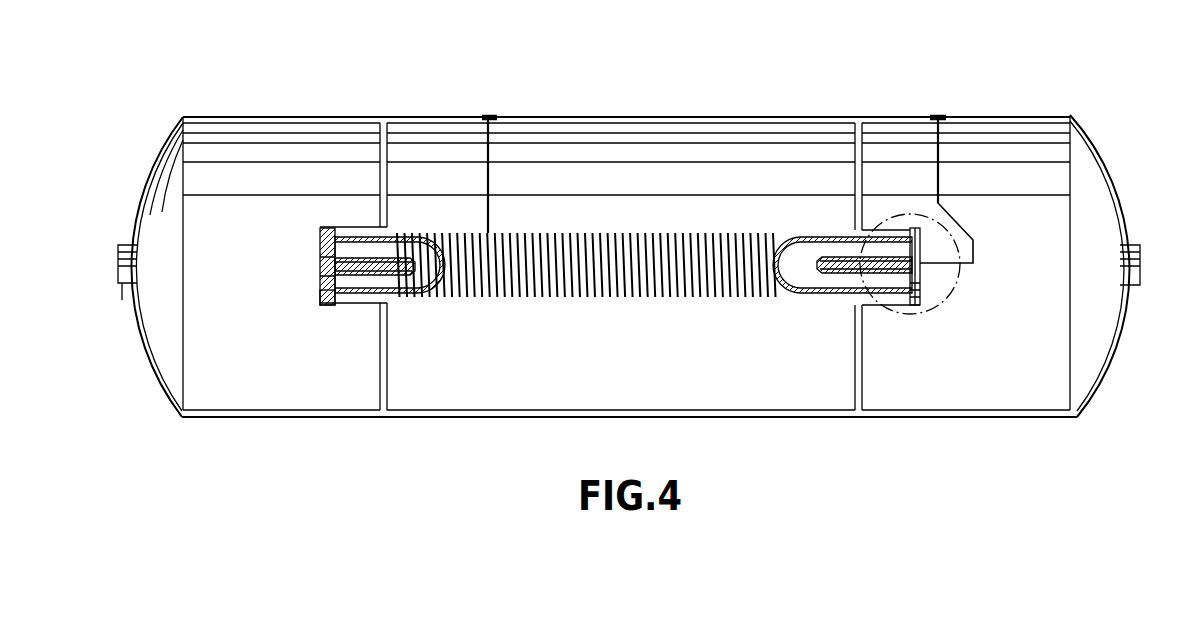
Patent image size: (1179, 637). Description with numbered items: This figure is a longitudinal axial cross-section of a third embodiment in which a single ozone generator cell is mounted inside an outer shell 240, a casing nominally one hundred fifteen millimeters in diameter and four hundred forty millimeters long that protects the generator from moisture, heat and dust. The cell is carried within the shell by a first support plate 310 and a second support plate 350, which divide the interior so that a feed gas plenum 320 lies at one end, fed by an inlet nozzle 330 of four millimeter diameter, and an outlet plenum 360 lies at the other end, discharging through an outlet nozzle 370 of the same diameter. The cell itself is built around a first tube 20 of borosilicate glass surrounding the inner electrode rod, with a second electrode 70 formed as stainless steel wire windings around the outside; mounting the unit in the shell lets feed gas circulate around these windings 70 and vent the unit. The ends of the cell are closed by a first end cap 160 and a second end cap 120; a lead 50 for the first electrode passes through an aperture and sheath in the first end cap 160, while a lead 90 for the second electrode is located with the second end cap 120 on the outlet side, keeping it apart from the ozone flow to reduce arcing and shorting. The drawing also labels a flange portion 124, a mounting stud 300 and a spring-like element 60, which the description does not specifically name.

The first tube 20 is at (805, 267).
The lead 50 is at (950, 213).
The coil spring 60 is at (665, 290).
The second electrode 70 is at (580, 287).
The lead 90 is at (490, 183).
The second end cap 120 is at (320, 298).
The flange lower portion 124 is at (330, 305).
The first end cap 160 is at (918, 285).
The outer shell 240 is at (680, 120).
The mounting stud 300 is at (488, 115).
The first support plate 310 is at (857, 150).
The feed gas plenum 320 is at (1033, 135).
The inlet nozzle 330 is at (1132, 247).
The second support plate 350 is at (387, 152).
The outlet plenum 360 is at (283, 138).
The outlet nozzle 370 is at (128, 278).